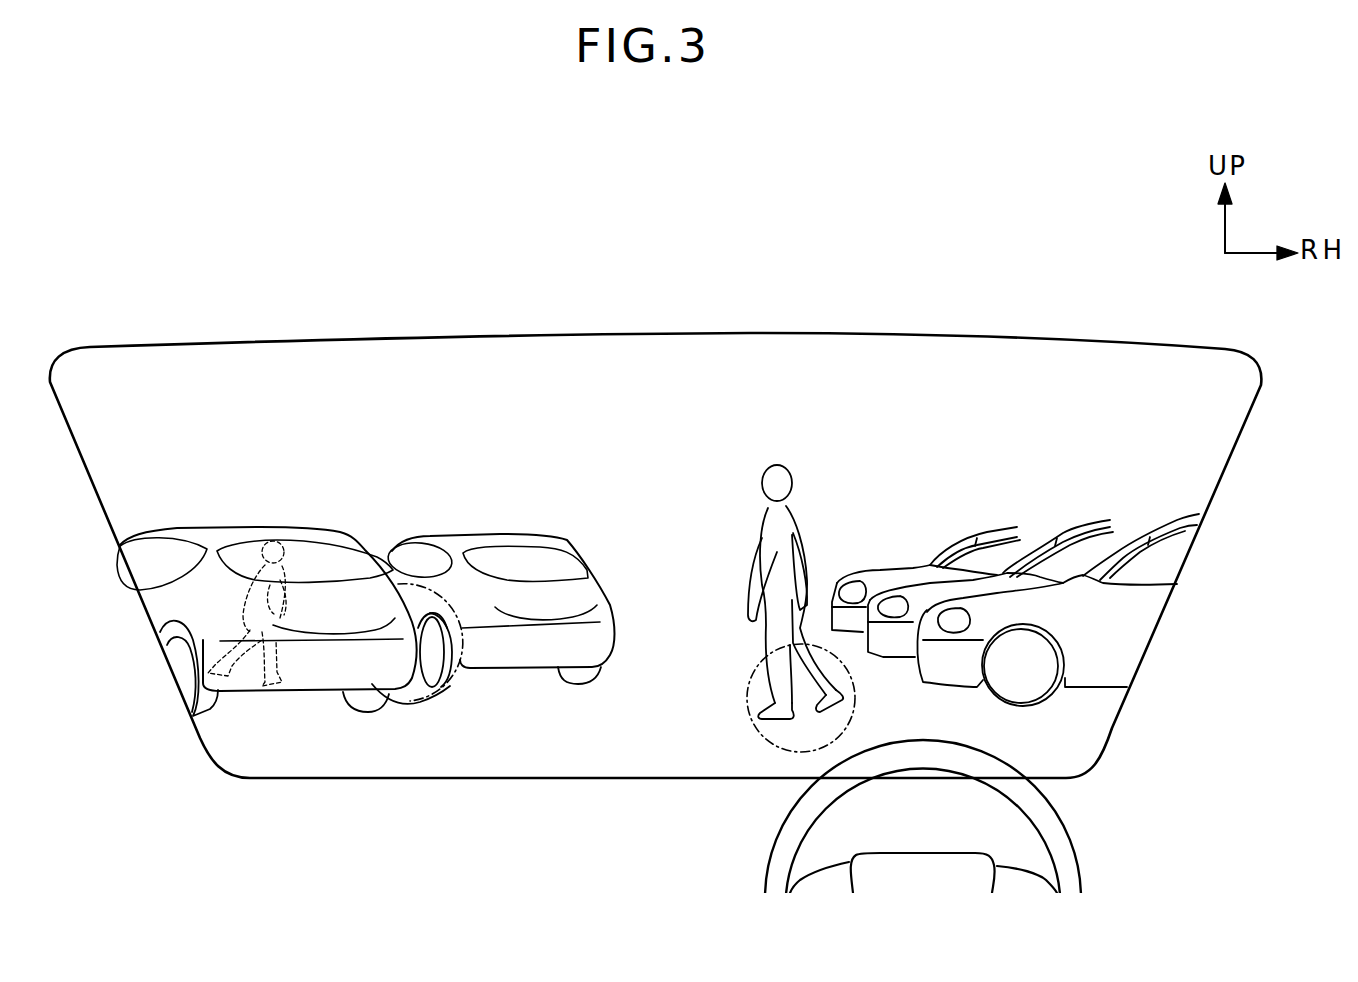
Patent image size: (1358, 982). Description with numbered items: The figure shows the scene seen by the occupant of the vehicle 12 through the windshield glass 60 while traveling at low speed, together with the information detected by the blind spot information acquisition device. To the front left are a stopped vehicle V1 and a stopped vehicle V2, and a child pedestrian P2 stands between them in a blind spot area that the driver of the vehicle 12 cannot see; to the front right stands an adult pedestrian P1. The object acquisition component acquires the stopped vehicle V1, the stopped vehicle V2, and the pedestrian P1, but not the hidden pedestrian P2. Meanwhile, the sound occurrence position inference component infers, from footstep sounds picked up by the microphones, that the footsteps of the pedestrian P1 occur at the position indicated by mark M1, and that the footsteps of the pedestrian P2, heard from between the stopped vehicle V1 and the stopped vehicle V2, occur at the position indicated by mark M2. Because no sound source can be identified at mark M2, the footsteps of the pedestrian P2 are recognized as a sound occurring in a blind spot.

The vehicle 12 is at (299, 276).
The windshield glass 60 is at (971, 336).
The stopped vehicle V1 is at (221, 527).
The stopped vehicle V2 is at (497, 534).
The pedestrian P1 is at (779, 463).
The pedestrian P2 is at (292, 550).
The mark M1 is at (786, 752).
The mark M2 is at (427, 703).